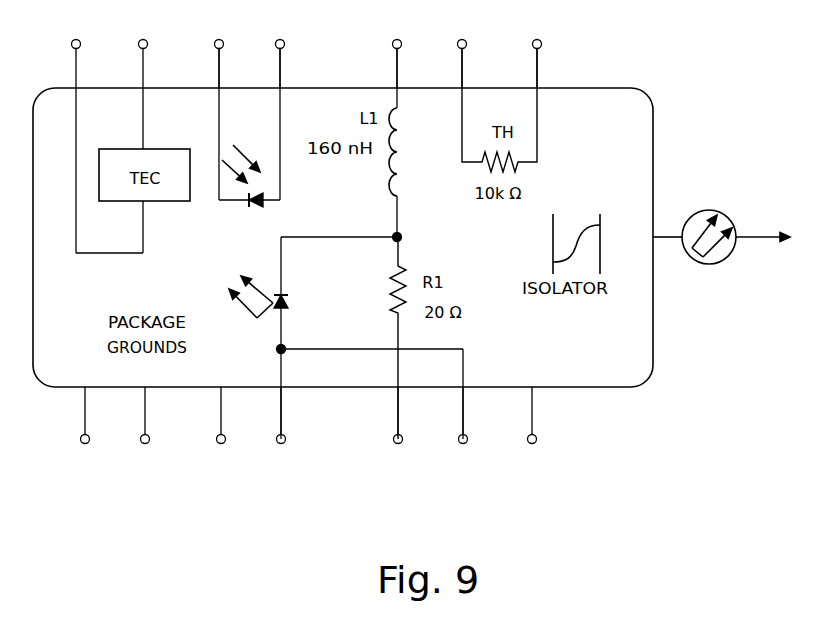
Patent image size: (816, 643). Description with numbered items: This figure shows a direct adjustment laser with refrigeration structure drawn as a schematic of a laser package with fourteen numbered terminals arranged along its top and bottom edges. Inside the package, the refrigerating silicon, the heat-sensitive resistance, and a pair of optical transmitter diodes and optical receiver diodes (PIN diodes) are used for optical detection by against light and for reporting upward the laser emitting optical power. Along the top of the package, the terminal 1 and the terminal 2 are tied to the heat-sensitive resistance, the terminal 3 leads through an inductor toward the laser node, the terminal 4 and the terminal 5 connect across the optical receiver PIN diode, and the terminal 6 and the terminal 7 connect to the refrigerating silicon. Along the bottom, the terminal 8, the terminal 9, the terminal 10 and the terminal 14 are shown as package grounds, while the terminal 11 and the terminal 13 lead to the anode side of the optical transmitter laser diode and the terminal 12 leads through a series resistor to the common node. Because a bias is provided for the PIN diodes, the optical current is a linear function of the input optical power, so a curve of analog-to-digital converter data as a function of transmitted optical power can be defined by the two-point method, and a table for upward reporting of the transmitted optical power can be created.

The package pin 1 (thermistor terminal) 1 is at (537, 46).
The package pin 2 (thermistor terminal) 2 is at (462, 46).
The package pin 3 (laser cathode via inductor L1, negative) 3 is at (409, 46).
The package pin 4 (monitor photodiode, negative) 4 is at (286, 46).
The package pin 5 (monitor photodiode, positive) 5 is at (227, 46).
The package pin 6 (TEC positive) 6 is at (151, 128).
The package pin 7 (TEC negative) 7 is at (106, 128).
The package pin 8 (package ground) 8 is at (84, 436).
The package pin 9 (package ground) 9 is at (144, 436).
The package pin 10 (package ground) 10 is at (221, 436).
The package pin 11 (laser anode, positive) 11 is at (283, 436).
The package pin 12 (resistor R1, negative) 12 is at (400, 436).
The package pin 13 (laser anode, positive) 13 is at (467, 436).
The package pin 14 (package ground) 14 is at (532, 436).